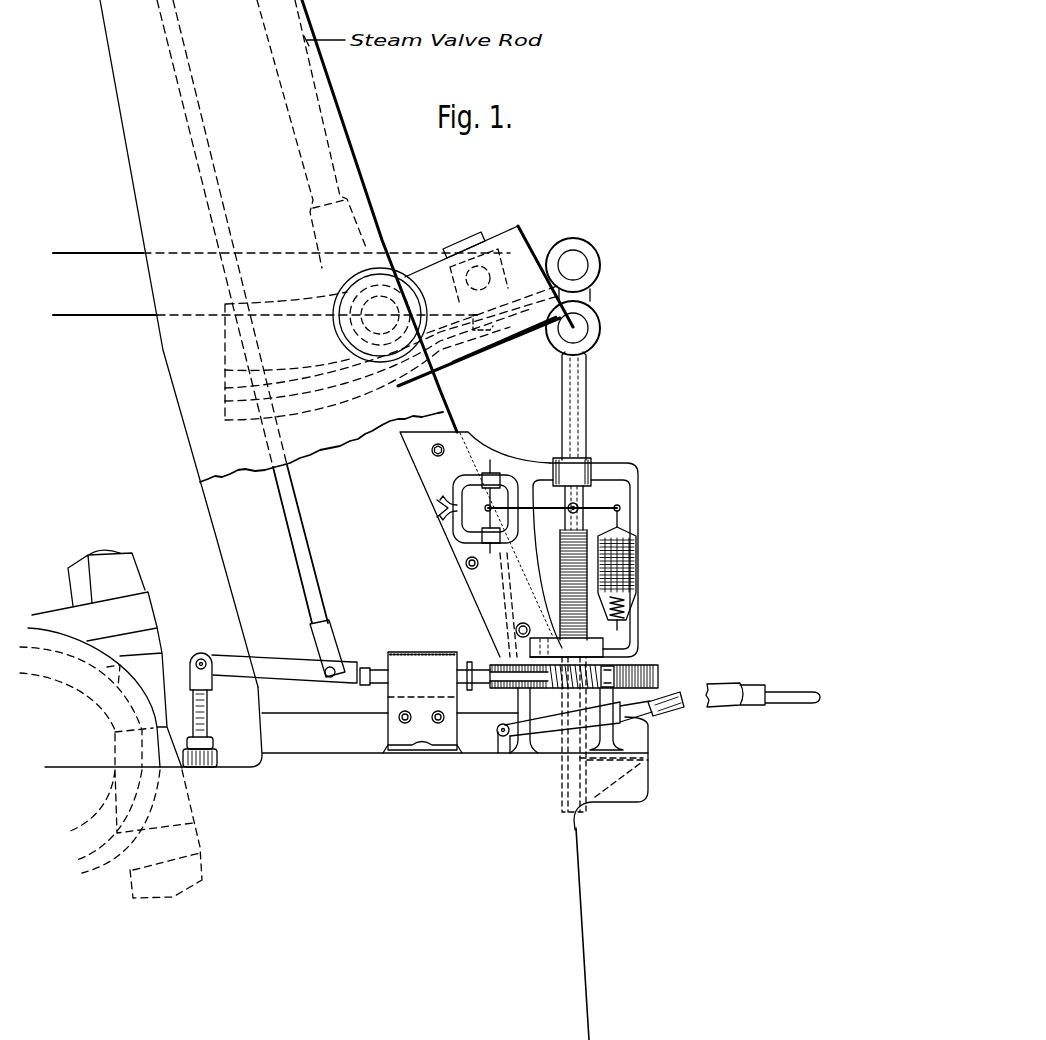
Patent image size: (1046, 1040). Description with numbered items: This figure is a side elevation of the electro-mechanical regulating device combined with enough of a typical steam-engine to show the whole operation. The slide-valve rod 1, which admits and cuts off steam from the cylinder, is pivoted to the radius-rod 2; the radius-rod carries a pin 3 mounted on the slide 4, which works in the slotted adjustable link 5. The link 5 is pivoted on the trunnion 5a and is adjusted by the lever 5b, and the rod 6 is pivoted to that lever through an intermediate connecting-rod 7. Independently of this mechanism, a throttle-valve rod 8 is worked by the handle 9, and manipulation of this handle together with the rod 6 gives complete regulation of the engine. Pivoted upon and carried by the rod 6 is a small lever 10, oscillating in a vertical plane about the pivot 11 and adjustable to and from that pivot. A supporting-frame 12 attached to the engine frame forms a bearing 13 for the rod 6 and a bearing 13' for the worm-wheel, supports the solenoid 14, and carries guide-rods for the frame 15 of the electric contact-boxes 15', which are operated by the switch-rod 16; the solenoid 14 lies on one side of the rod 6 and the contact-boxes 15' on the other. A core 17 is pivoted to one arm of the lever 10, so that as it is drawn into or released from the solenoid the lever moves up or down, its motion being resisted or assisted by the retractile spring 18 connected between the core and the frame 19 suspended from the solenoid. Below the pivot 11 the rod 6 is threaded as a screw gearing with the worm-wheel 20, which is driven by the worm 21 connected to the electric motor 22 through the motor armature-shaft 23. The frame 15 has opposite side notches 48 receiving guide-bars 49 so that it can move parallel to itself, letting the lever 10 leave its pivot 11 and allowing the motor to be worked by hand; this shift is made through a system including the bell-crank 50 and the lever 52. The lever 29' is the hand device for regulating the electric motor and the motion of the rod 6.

The slide-valve rod 1 is at (297, 108).
The radius-rod 2 is at (305, 336).
The pin 3 is at (478, 277).
The slide 4 is at (456, 247).
The slotted adjustable link 5 is at (518, 238).
The trunnion 5a is at (380, 315).
The lever 5b is at (546, 248).
The rod 6 is at (576, 374).
The intermediate connecting-rod 7 is at (588, 298).
The throttle-valve rod 8 is at (312, 598).
The handle 9 is at (267, 666).
The small lever 10 is at (617, 507).
The pivot 11 is at (578, 506).
The supporting-frame 12 is at (639, 627).
The bearing 13 is at (589, 462).
The bearing 13' is at (541, 632).
The solenoid 14 is at (637, 553).
The frame 15 is at (471, 504).
The electric contact-boxes 15' is at (461, 552).
The switch-rod 16 is at (491, 470).
The core 17 is at (627, 603).
The retractile spring 18 is at (609, 614).
The frame 19 is at (620, 622).
The worm-wheel 20 is at (656, 673).
The worm 21 is at (624, 664).
The electric motor 22 is at (459, 661).
The motor armature-shaft 23 is at (486, 685).
The lever 29' is at (734, 712).
The side notches 48 is at (449, 517).
The guide-bars 49 is at (444, 509).
The bell-crank 50 is at (500, 727).
The lever 52 is at (500, 596).